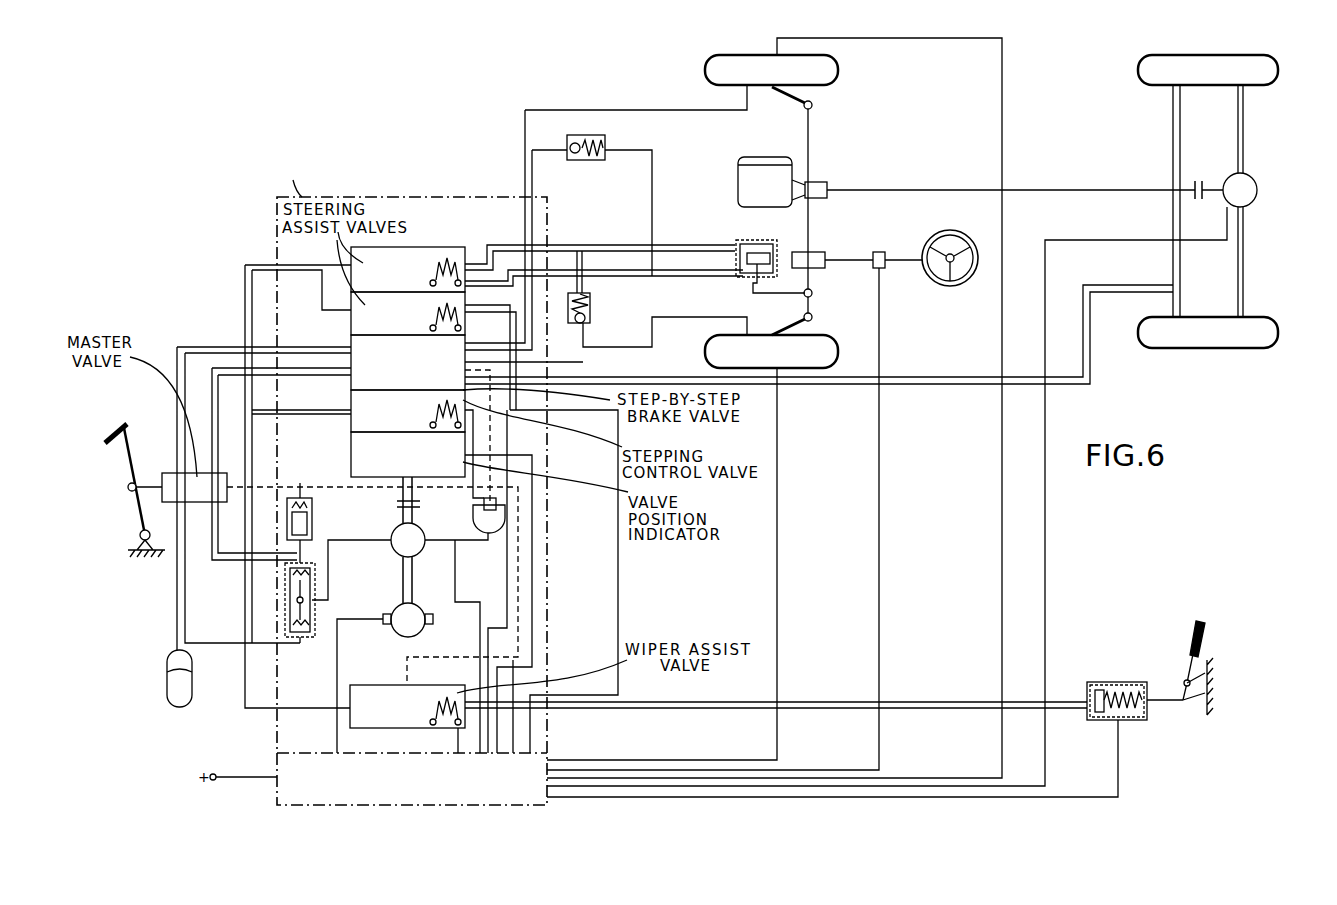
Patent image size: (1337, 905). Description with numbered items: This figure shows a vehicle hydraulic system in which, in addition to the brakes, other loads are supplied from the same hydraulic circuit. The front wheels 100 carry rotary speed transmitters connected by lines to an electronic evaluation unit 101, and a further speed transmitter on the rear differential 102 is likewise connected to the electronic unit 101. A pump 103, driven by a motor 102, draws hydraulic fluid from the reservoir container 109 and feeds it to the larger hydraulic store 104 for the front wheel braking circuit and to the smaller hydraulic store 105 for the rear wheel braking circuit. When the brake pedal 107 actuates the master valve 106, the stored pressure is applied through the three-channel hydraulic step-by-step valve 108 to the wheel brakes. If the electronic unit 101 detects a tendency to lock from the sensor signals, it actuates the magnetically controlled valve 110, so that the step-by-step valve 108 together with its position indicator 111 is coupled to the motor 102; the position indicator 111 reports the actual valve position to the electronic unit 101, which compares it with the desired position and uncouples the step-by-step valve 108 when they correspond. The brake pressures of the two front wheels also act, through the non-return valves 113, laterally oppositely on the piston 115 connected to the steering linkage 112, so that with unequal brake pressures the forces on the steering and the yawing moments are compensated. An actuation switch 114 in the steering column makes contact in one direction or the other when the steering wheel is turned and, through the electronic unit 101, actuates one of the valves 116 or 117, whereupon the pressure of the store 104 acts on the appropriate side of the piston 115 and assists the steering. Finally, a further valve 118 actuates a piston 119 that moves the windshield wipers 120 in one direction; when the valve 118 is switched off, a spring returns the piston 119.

The front wheels 100 is at (835, 72).
The electronic evaluation unit 101 is at (548, 757).
The motor 102 is at (427, 630).
The pump 103 is at (393, 548).
The larger hydraulic store 104 is at (187, 690).
The smaller hydraulic store 105 is at (313, 513).
The master valve 106 is at (175, 487).
The brake pedal 107 is at (128, 427).
The three-channel hydraulic step-by-step valve 108 is at (358, 378).
The reservoir container 109 is at (505, 520).
The magnetically controlled valve 110 is at (358, 416).
The position indicator 111 is at (358, 458).
The steering linkage 112 is at (813, 291).
The non-return valves 113 is at (587, 290).
The actuation switch 114 is at (878, 250).
The piston 115 is at (743, 247).
The valve 116 is at (432, 247).
The valve 117 is at (358, 318).
The further valve 118 is at (382, 695).
The piston 119 is at (1092, 690).
The windshield wipers 120 is at (1207, 650).